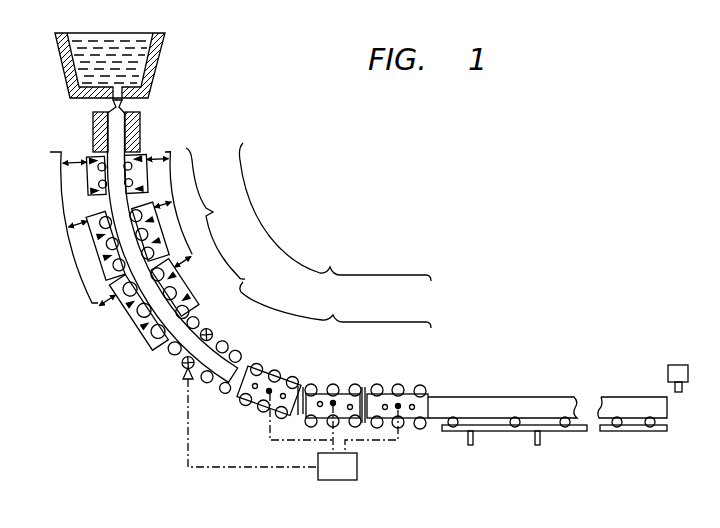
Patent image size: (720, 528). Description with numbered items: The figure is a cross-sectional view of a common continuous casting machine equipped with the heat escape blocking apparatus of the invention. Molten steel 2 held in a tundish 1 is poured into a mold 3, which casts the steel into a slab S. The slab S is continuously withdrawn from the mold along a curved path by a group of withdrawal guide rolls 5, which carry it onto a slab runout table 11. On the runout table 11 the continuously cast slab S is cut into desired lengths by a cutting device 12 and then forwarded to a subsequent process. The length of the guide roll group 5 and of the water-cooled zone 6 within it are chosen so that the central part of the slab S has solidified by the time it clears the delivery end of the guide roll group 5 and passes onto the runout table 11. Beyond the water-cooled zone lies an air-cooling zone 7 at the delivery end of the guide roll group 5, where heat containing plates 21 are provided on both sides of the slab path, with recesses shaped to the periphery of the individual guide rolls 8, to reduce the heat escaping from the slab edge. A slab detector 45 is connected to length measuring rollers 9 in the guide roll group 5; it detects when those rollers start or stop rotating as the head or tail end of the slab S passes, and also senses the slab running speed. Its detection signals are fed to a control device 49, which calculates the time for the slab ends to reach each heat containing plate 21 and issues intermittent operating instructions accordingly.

The tundish 1 is at (162, 58).
The molten steel 2 is at (73, 65).
The mold 3 is at (93, 127).
The withdrawal guide roll group 5 is at (335, 212).
The water-cooled zone 6 is at (147, 254).
The air-cooling zone 7 is at (335, 305).
The guide roll 8 is at (284, 371).
The length measuring rollers 9 is at (213, 331).
The slab runout table 11 is at (495, 433).
The cutting device 12 is at (677, 365).
The heat containing plate 21 is at (277, 404).
The slab detector 45 is at (186, 380).
The control device 49 is at (357, 467).
The slab S is at (187, 347).